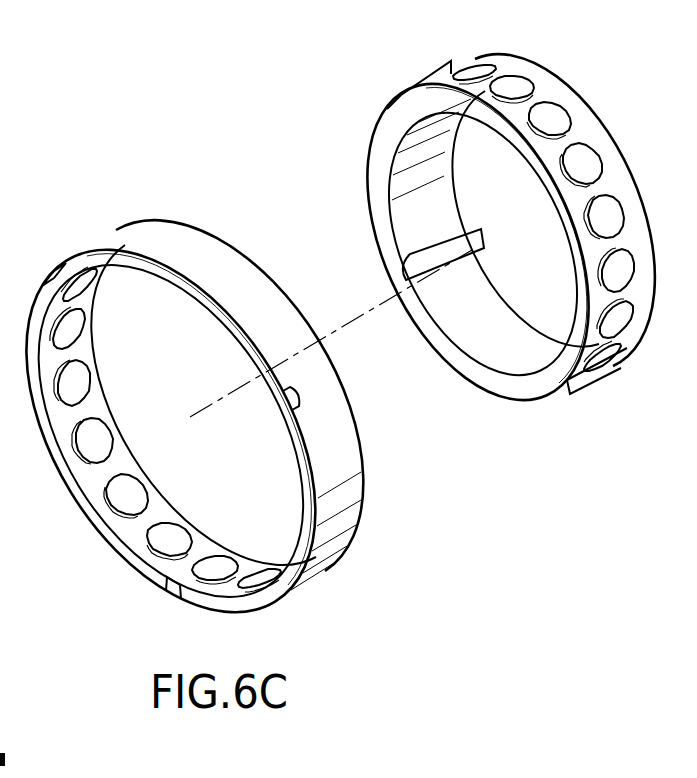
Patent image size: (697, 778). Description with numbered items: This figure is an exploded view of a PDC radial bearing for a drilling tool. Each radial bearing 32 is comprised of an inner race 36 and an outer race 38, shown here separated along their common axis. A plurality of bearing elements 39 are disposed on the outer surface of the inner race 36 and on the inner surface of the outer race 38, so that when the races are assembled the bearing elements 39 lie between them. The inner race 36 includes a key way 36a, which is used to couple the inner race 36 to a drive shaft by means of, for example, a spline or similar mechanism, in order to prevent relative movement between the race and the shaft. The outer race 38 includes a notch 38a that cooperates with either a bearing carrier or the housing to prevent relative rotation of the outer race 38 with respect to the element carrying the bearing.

The radial bearing 32 is at (348, 350).
The inner race 36 is at (474, 242).
The key way 36a is at (430, 257).
The outer race 38 is at (187, 413).
The notch 38a is at (50, 275).
The bearing elements 39 is at (80, 323).